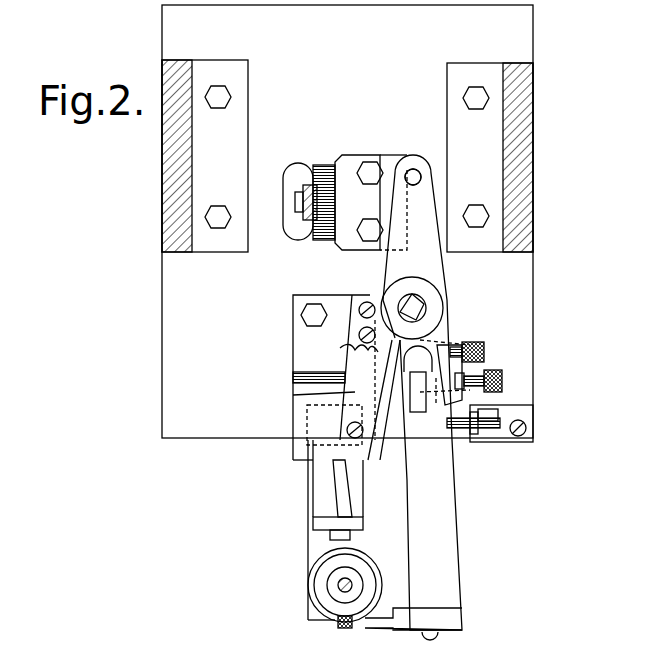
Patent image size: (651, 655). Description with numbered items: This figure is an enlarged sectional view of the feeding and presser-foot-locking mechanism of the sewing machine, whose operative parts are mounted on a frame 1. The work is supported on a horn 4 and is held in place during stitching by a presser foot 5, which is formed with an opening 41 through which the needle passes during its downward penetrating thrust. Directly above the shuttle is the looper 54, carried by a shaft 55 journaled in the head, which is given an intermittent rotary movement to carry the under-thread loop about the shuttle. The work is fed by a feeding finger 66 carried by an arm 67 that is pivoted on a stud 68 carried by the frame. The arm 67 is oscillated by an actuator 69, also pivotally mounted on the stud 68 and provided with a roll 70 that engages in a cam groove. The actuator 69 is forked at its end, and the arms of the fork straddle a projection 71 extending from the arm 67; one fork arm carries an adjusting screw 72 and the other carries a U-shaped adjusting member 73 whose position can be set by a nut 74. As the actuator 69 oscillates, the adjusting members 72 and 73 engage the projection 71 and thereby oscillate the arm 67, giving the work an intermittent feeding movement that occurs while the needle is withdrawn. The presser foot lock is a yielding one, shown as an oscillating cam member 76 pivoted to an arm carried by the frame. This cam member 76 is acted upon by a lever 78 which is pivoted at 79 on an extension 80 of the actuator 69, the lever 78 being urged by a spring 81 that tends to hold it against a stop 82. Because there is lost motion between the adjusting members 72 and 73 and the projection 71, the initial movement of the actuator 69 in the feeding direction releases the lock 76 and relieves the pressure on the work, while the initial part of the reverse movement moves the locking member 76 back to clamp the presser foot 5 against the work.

The frame 1 is at (168, 316).
The horn 4 is at (275, 644).
The presser foot 5 is at (312, 553).
The opening 41 is at (340, 628).
The looper 54 is at (320, 585).
The shaft 55 is at (338, 591).
The feeding finger 66 is at (400, 622).
The arm 67 is at (434, 508).
The stud 68 is at (425, 301).
The actuator 69 is at (424, 240).
The roll 70 is at (414, 174).
The projection 71 is at (430, 448).
The adjusting screw 72 is at (486, 372).
The U-shaped adjusting member 73 is at (450, 360).
The nut 74 is at (478, 345).
The cam member 76 is at (320, 525).
The lever 78 is at (345, 495).
The pivot 79 is at (340, 455).
The extension 80 is at (330, 393).
The spring 81 is at (340, 352).
The stop 82 is at (343, 371).